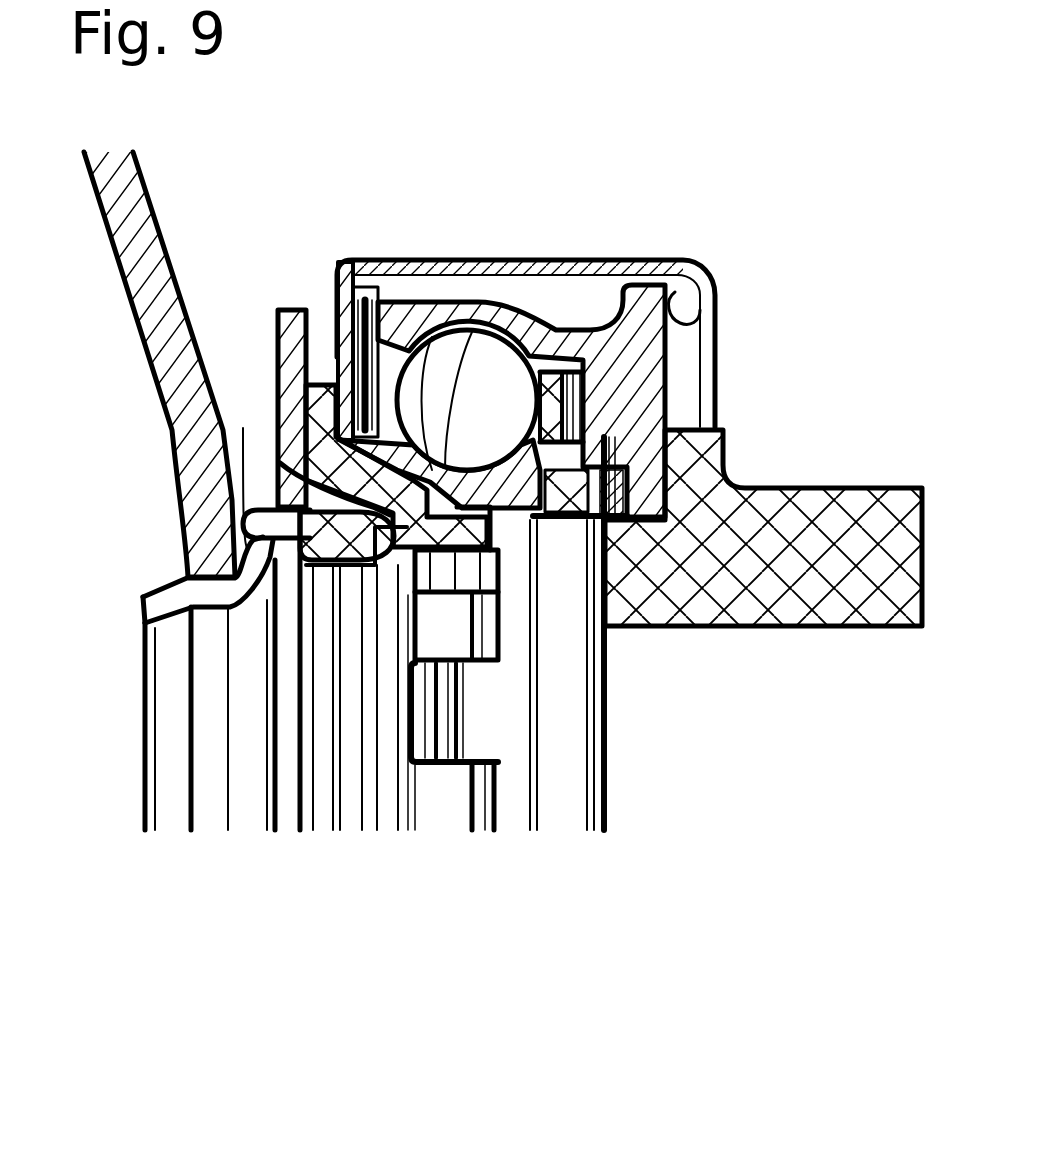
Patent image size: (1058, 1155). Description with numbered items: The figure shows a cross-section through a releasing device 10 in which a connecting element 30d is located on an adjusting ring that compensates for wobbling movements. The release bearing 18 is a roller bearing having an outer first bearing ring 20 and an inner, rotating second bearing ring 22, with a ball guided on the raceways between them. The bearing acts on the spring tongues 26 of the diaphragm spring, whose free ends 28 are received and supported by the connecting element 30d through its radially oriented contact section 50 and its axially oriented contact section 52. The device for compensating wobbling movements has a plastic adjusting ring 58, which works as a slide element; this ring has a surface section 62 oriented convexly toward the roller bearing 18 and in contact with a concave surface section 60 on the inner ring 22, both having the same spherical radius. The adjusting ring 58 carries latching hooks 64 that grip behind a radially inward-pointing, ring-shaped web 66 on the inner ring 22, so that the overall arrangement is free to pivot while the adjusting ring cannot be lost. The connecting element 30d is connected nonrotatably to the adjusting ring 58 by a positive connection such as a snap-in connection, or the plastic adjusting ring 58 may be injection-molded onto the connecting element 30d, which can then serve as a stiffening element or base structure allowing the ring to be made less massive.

The releasing device 10 is at (101, 831).
The release bearing 18 is at (597, 254).
The first bearing ring 20 is at (482, 312).
The second bearing ring 22 is at (466, 340).
The spring tongues 26 is at (132, 234).
The free ends 28 is at (208, 562).
The connecting element 30d is at (290, 322).
The radially oriented contact section 50 is at (243, 428).
The axially oriented contact section 52 is at (220, 595).
The adjusting ring 58 is at (400, 520).
The concave surface section 60 is at (420, 330).
The convex surface section 62 is at (380, 500).
The latching hooks 64 is at (497, 530).
The ring-shaped web 66 is at (548, 420).